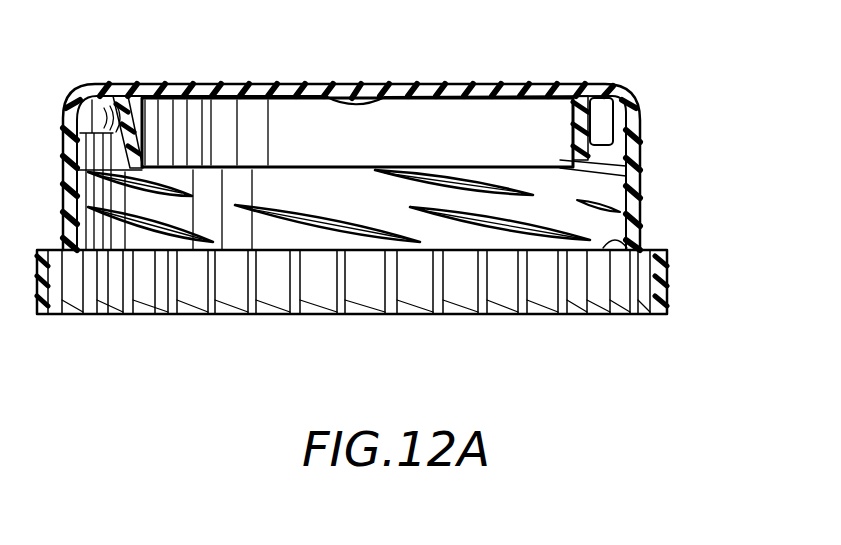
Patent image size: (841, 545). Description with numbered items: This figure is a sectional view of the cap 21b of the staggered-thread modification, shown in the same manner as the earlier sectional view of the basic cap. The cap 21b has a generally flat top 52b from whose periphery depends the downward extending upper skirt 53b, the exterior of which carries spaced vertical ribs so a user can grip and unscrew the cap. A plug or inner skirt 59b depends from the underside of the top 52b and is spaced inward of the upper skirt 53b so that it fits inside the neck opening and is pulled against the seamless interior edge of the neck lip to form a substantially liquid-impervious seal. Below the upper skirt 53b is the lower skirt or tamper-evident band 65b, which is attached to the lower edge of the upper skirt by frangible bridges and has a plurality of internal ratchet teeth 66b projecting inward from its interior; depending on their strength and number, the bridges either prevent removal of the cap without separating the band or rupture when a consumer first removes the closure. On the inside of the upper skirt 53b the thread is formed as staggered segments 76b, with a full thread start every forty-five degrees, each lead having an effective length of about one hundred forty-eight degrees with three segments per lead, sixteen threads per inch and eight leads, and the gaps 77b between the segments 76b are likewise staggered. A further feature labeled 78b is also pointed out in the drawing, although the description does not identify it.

The cap 21b is at (176, 78).
The top 52b is at (388, 84).
The upper skirt 53b is at (640, 200).
The plug or inner skirt 59b is at (578, 125).
The lower skirt or tamper-evident band 65b is at (667, 278).
The internal ratchet teeth 66b is at (450, 292).
The thread segments 76b is at (473, 215).
The gaps 77b is at (612, 238).
The blade 78b is at (378, 200).